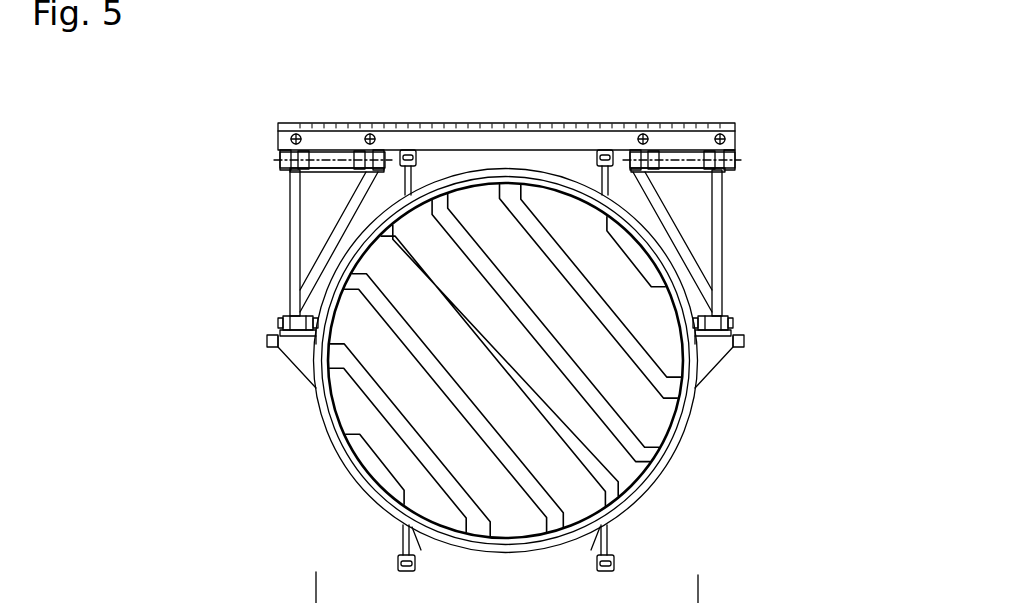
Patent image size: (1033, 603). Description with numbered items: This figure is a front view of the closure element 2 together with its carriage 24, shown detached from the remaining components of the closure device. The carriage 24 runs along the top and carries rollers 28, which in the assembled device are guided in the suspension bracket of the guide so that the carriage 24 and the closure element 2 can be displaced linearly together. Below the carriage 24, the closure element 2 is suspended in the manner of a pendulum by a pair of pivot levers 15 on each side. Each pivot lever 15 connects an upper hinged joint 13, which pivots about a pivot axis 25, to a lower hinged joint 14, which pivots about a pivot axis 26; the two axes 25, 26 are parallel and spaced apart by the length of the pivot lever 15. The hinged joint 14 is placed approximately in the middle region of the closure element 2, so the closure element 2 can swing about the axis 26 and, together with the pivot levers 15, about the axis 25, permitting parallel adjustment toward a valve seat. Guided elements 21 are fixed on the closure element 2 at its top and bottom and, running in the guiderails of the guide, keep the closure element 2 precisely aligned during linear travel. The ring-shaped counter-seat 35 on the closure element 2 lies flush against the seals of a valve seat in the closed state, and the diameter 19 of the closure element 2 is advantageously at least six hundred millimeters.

The closure element 2 is at (648, 292).
The hinged joint 13 is at (370, 133).
The hinged joint 14 is at (268, 343).
The pivot lever 15 is at (320, 258).
The diameter 19 is at (540, 602).
The guided element 21 is at (410, 150).
The carriage 24 is at (548, 140).
The pivot axis 25 is at (270, 160).
The pivot axis 26 is at (283, 322).
The roller 28 is at (287, 150).
The counter-seat 35 is at (655, 475).